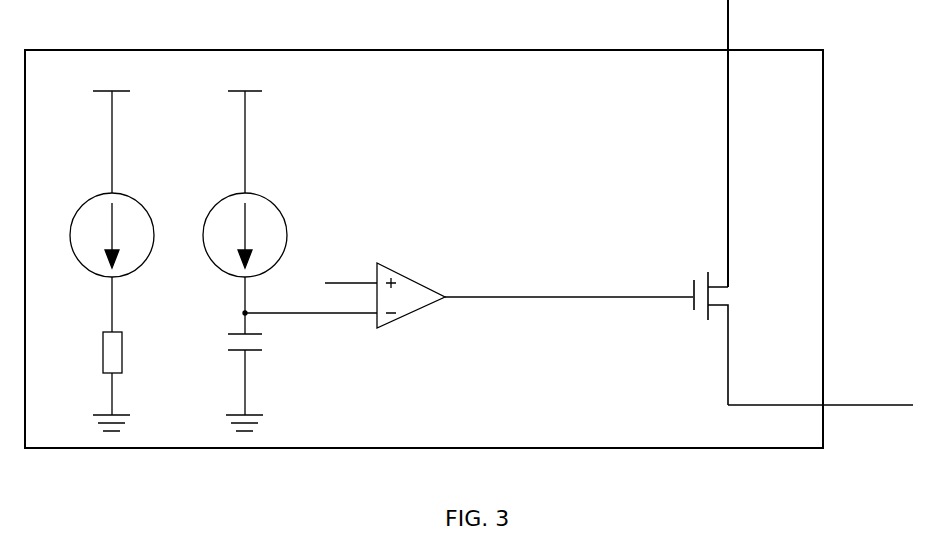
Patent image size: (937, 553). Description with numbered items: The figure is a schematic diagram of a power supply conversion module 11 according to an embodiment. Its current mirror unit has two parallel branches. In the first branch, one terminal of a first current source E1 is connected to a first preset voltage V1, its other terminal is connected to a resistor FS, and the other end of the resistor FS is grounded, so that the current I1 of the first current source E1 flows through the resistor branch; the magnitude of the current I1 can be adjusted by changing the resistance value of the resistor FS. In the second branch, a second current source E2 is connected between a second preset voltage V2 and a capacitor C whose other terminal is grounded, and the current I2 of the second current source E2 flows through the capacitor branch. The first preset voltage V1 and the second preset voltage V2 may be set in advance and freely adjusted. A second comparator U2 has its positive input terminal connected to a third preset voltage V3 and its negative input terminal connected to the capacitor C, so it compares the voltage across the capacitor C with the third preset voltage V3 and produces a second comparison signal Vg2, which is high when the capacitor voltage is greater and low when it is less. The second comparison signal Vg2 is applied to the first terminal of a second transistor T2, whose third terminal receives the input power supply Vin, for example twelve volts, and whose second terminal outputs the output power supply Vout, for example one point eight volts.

The power supply conversion module 11 is at (823, 250).
The input power supply Vin is at (754, 143).
The first preset voltage V1 is at (93, 137).
The first current source E1 is at (112, 224).
The current of the first current source I1 is at (96, 304).
The resistor FS is at (96, 381).
The second preset voltage V2 is at (227, 137).
The second current source E2 is at (245, 224).
The current of the second current source I2 is at (227, 305).
The capacitor C is at (231, 382).
The third preset voltage V3 is at (351, 268).
The second comparator U2 is at (345, 283).
The second comparison signal Vg2 is at (569, 290).
The second transistor T2 is at (699, 320).
The output power supply Vout is at (820, 385).